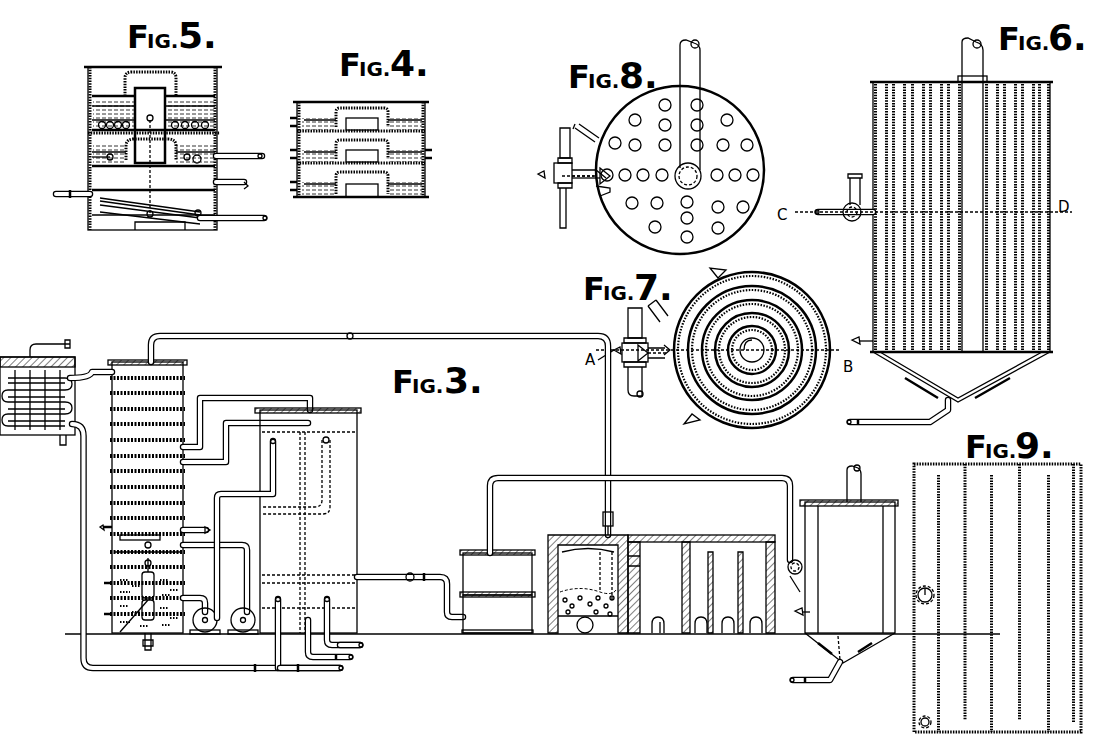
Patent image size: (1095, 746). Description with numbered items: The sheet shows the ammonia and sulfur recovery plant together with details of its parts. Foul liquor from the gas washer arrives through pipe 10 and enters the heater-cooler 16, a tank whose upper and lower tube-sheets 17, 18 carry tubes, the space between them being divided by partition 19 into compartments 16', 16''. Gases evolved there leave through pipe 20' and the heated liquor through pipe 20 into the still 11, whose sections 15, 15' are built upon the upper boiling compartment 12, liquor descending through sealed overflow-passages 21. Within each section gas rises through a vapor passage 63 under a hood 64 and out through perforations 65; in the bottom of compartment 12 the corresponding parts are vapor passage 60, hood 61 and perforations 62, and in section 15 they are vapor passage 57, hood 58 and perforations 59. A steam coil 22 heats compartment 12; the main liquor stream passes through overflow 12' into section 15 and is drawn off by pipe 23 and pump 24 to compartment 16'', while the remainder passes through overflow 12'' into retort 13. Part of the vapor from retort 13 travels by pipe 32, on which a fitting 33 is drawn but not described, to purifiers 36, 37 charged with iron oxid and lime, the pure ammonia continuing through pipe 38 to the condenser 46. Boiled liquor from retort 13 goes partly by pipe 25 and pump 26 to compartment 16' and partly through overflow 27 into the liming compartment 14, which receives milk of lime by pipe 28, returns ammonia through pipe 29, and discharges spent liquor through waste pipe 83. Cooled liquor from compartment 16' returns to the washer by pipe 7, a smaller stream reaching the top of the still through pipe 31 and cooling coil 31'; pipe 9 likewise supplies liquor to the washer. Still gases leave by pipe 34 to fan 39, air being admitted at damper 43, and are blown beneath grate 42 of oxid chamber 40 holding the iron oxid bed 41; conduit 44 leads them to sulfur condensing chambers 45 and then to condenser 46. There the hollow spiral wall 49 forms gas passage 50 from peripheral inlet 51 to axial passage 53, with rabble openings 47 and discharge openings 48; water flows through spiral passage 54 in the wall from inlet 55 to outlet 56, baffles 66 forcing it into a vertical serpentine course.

In FIG. 3, the pipe 7 is at (328, 672).
In FIG. 3, the pipe 9 is at (362, 646).
In FIG. 3, the pipe 10 is at (348, 658).
In FIG. 3, the still 11 is at (126, 621).
In FIG. 5, the upper boiling compartment 12 is at (142, 148).
In FIG. 3, the upper boiling compartment 12 is at (147, 534).
In FIG. 5, the overflow 12' is at (77, 113).
In FIG. 3, the overflow 12' is at (135, 541).
In FIG. 5, the overflow 12'' is at (149, 177).
In FIG. 3, the overflow 12'' is at (135, 557).
In FIG. 5, the boiling compartment 13 is at (90, 178).
In FIG. 3, the boiling compartment 13 is at (112, 586).
In FIG. 3, the liming compartment 14 is at (112, 618).
In FIG. 5, the section 15 is at (140, 151).
In FIG. 3, the section 15 is at (156, 496).
In FIG. 4, the section 15' is at (377, 180).
In FIG. 3, the heater-cooler 16 is at (308, 510).
In FIG. 3, the compartment 16' is at (289, 532).
In FIG. 3, the compartment 16'' is at (308, 582).
In FIG. 3, the upper tube-sheet 17 is at (333, 437).
In FIG. 3, the lower tube-sheet 18 is at (310, 615).
In FIG. 3, the partition 19 is at (305, 548).
In FIG. 3, the pipe 20 is at (245, 442).
In FIG. 3, the pipe 20' is at (246, 408).
In FIG. 4, the sealed overflow-passage 21 is at (297, 150).
In FIG. 5, the steam coil 22 is at (100, 126).
In FIG. 3, the steam coil 22 is at (104, 527).
In FIG. 5, the pipe 23 is at (240, 157).
In FIG. 3, the pipe 23 is at (236, 545).
In FIG. 3, the pump 24 is at (245, 634).
In FIG. 5, the pipe 25 is at (242, 220).
In FIG. 3, the pipe 25 is at (208, 600).
In FIG. 3, the pump 26 is at (207, 634).
In FIG. 5, the overflow 27 is at (95, 216).
In FIG. 3, the pipe 28 is at (151, 648).
In FIG. 3, the pipe 29 is at (130, 625).
In FIG. 3, the pipe 31 is at (199, 546).
In FIG. 3, the cooling coil 31' is at (56, 392).
In FIG. 5, the pipe 32 is at (236, 186).
In FIG. 3, the pipe 32 is at (378, 576).
In FIG. 3, the valve 33 is at (425, 574).
In FIG. 3, the pipe 34 is at (262, 334).
In FIG. 3, the purifier 36 is at (497, 612).
In FIG. 3, the purifier 37 is at (497, 572).
In FIG. 8, the pipe 38 is at (560, 130).
In FIG. 6, the pipe 38 is at (850, 190).
In FIG. 7, the pipe 38 is at (628, 314).
In FIG. 3, the pipe 38 is at (694, 478).
In FIG. 3, the fan 39 is at (583, 622).
In FIG. 3, the oxid chamber 40 is at (588, 584).
In FIG. 3, the bed of oxid of iron 41 is at (568, 590).
In FIG. 3, the grate 42 is at (603, 616).
In FIG. 3, the air damper 43 is at (614, 517).
In FIG. 3, the conduit 44 is at (636, 560).
In FIG. 3, the sulfur condensing chamber 45 is at (701, 584).
In FIG. 8, the ammonium carbonate condenser 46 is at (680, 170).
In FIG. 6, the ammonium carbonate condenser 46 is at (873, 110).
In FIG. 3, the ammonium carbonate condenser 46 is at (849, 566).
In FIG. 8, the openings 47 is at (632, 124).
In FIG. 6, the openings 47 is at (945, 82).
In FIG. 6, the discharge openings 48 is at (930, 392).
In FIG. 3, the discharge openings 48 is at (826, 656).
In FIG. 6, the spiral partition 49 is at (900, 352).
In FIG. 7, the spiral partition 49 is at (702, 338).
In FIG. 6, the spiral gas passage 50 is at (945, 282).
In FIG. 7, the spiral gas passage 50 is at (775, 315).
In FIG. 8, the peripheral inlet 51 is at (583, 188).
In FIG. 6, the peripheral inlet 51 is at (855, 222).
In FIG. 7, the peripheral inlet 51 is at (652, 362).
In FIG. 9, the peripheral inlet 51 is at (926, 585).
In FIG. 3, the peripheral inlet 51 is at (795, 576).
In FIG. 8, the axial passage 53 is at (698, 71).
In FIG. 6, the axial passage 53 is at (972, 195).
In FIG. 7, the axial passage 53 is at (752, 350).
In FIG. 3, the axial passage 53 is at (860, 486).
In FIG. 6, the spiral passage 54 is at (948, 318).
In FIG. 7, the spiral passage 54 is at (748, 325).
In FIG. 9, the spiral passage 54 is at (997, 598).
In FIG. 8, the water inlet 55 is at (592, 130).
In FIG. 6, the water inlet 55 is at (874, 420).
In FIG. 7, the water inlet 55 is at (654, 317).
In FIG. 3, the water inlet 55 is at (812, 682).
In FIG. 8, the water discharge 56 is at (540, 172).
In FIG. 6, the water discharge 56 is at (860, 331).
In FIG. 7, the water discharge 56 is at (615, 348).
In FIG. 9, the water discharge 56 is at (920, 722).
In FIG. 3, the water discharge 56 is at (796, 617).
In FIG. 5, the vapor passage 57 is at (100, 157).
In FIG. 5, the hood 58 is at (218, 133).
In FIG. 5, the perforations 59 is at (110, 160).
In FIG. 5, the vapor passage 60 is at (150, 151).
In FIG. 5, the hood 61 is at (168, 72).
In FIG. 5, the perforations 62 is at (180, 104).
In FIG. 4, the vapor passage 63 is at (362, 157).
In FIG. 4, the hood 64 is at (350, 140).
In FIG. 4, the perforations 65 is at (318, 120).
In FIG. 7, the baffles 66 is at (745, 395).
In FIG. 9, the baffles 66 is at (1004, 575).
In FIG. 3, the waste pipe 83 is at (148, 650).